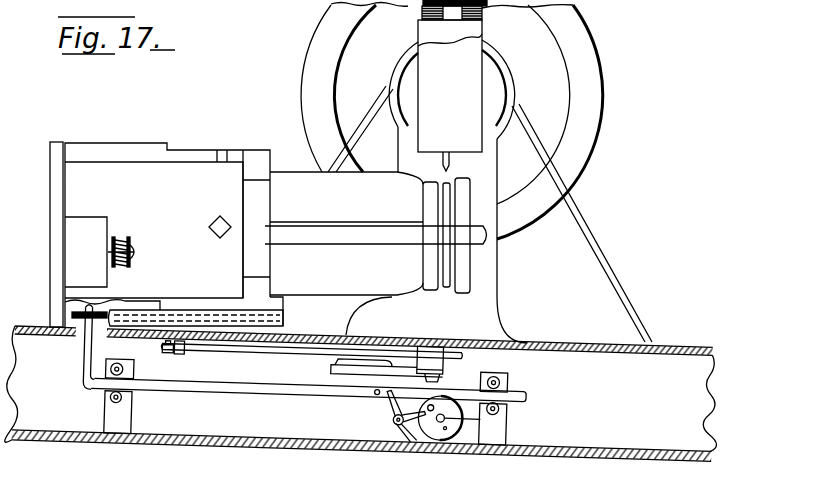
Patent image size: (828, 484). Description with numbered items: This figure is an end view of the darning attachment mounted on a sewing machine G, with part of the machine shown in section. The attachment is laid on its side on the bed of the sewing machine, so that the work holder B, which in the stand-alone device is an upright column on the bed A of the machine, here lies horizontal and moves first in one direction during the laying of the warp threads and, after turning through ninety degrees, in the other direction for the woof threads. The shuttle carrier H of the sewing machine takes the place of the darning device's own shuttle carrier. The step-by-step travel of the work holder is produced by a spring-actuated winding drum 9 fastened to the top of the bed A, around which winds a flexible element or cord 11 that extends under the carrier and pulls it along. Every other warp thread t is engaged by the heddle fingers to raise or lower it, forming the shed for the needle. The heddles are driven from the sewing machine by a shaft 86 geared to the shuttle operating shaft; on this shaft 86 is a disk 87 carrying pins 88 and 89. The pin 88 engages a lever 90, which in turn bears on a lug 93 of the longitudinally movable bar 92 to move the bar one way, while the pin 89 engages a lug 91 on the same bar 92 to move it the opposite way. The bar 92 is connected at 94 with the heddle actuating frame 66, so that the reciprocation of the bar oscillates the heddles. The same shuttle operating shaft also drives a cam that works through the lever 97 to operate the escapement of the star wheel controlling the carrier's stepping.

The bed of the machine A is at (166, 217).
The work holder B is at (376, 233).
The sewing machine G is at (476, 173).
The shuttle carrier H is at (370, 368).
The warp thread t is at (450, 163).
The winding drum 9 is at (135, 245).
The flexible element 11 is at (119, 237).
The heddle actuating frame 66 is at (104, 313).
The shaft 86 is at (493, 408).
The disk 87 is at (417, 440).
The pin 88 is at (433, 373).
The pin 89 is at (460, 424).
The lever 90 is at (395, 403).
The lug 91 is at (436, 393).
The longitudinally movable bar 92 is at (300, 387).
The lug 93 is at (380, 382).
The connection 94 is at (80, 331).
The lever 97 is at (243, 346).